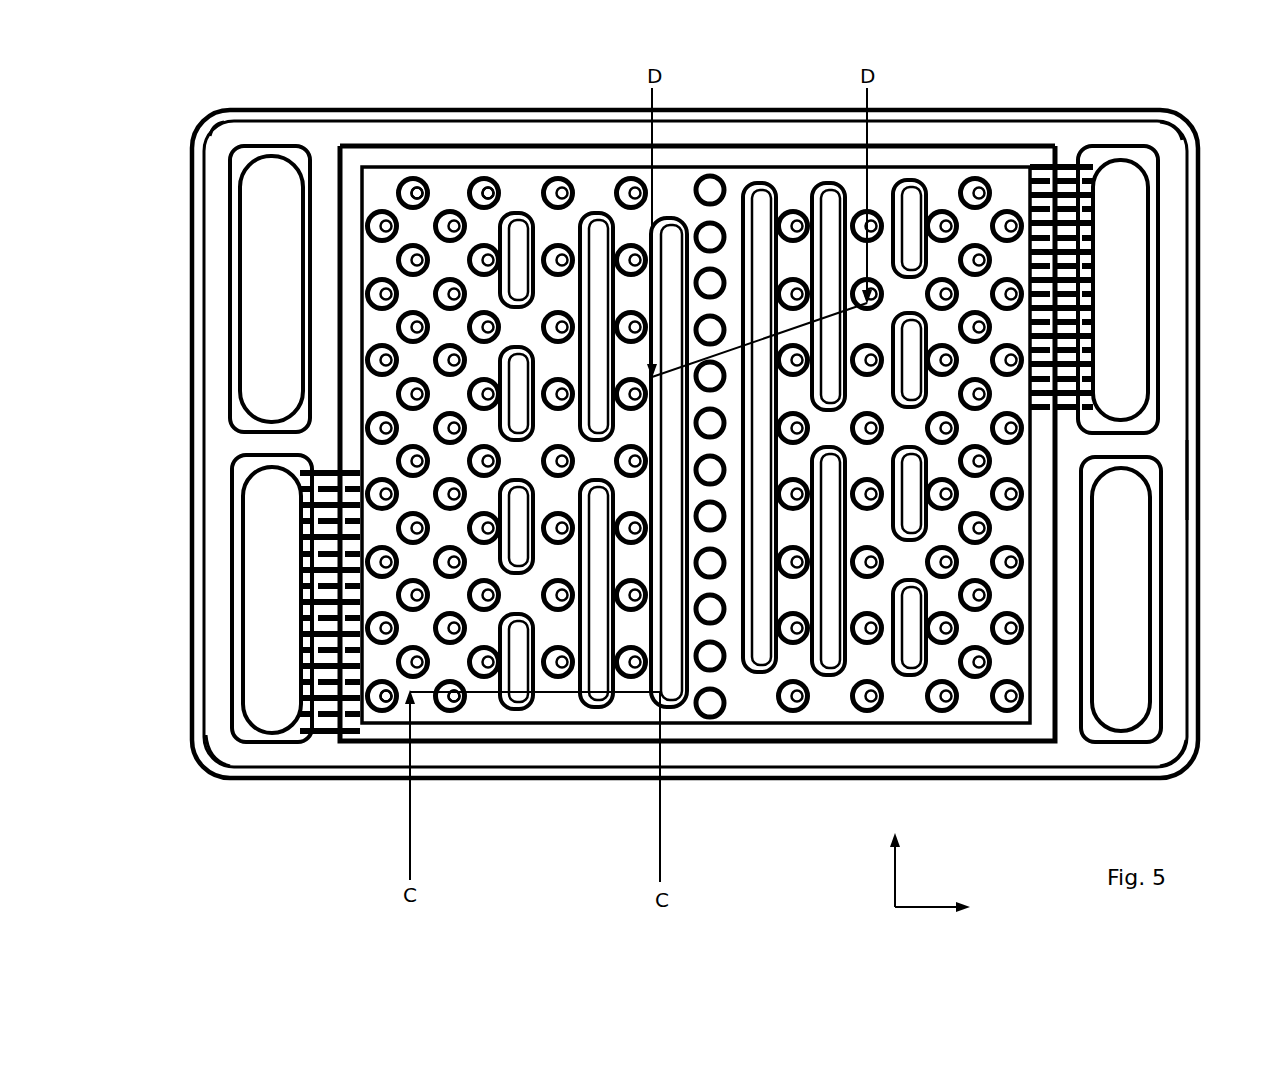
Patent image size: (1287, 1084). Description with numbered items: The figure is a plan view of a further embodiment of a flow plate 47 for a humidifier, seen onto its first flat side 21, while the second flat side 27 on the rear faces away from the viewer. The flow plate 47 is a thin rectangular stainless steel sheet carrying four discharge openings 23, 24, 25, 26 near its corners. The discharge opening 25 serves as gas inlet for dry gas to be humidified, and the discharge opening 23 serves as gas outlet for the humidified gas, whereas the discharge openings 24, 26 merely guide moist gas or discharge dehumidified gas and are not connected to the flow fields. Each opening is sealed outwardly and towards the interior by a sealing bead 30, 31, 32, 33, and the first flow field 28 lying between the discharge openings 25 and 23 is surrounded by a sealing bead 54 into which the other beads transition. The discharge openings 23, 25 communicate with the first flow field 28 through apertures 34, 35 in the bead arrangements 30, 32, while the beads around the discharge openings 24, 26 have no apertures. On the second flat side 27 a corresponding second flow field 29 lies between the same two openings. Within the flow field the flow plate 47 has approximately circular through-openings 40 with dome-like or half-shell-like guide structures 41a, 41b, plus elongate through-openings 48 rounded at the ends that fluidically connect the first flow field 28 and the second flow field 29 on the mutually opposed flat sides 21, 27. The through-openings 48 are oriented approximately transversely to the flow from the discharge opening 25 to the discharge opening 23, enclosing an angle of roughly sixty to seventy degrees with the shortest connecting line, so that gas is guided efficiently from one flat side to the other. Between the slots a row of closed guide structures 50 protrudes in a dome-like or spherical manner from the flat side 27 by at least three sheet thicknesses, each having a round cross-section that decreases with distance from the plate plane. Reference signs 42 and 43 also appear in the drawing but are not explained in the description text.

The first flat side 21 is at (903, 143).
The discharge opening 23 is at (260, 610).
The discharge opening 24 is at (1131, 622).
The discharge opening 25 is at (1150, 280).
The discharge opening 26 is at (257, 262).
The second flat side 27 is at (544, 96).
The first flow field 28 is at (978, 711).
The second flow field 29 is at (998, 93).
The sealing bead 30 is at (232, 732).
The sealing bead 31 is at (1172, 735).
The sealing bead 32 is at (1143, 133).
The sealing bead 33 is at (237, 140).
The aperture 34 is at (284, 550).
The aperture 35 is at (1115, 314).
The through-openings 40 is at (393, 165).
The guide structure 41a is at (380, 713).
The guide structure 41b is at (415, 165).
The x axis 42 is at (898, 910).
The y axis 43 is at (893, 888).
The flow plate 47 is at (1205, 490).
The elongate through-openings 48 is at (528, 708).
The closed guide structures 50 is at (718, 692).
The sealing bead 54 is at (778, 132).